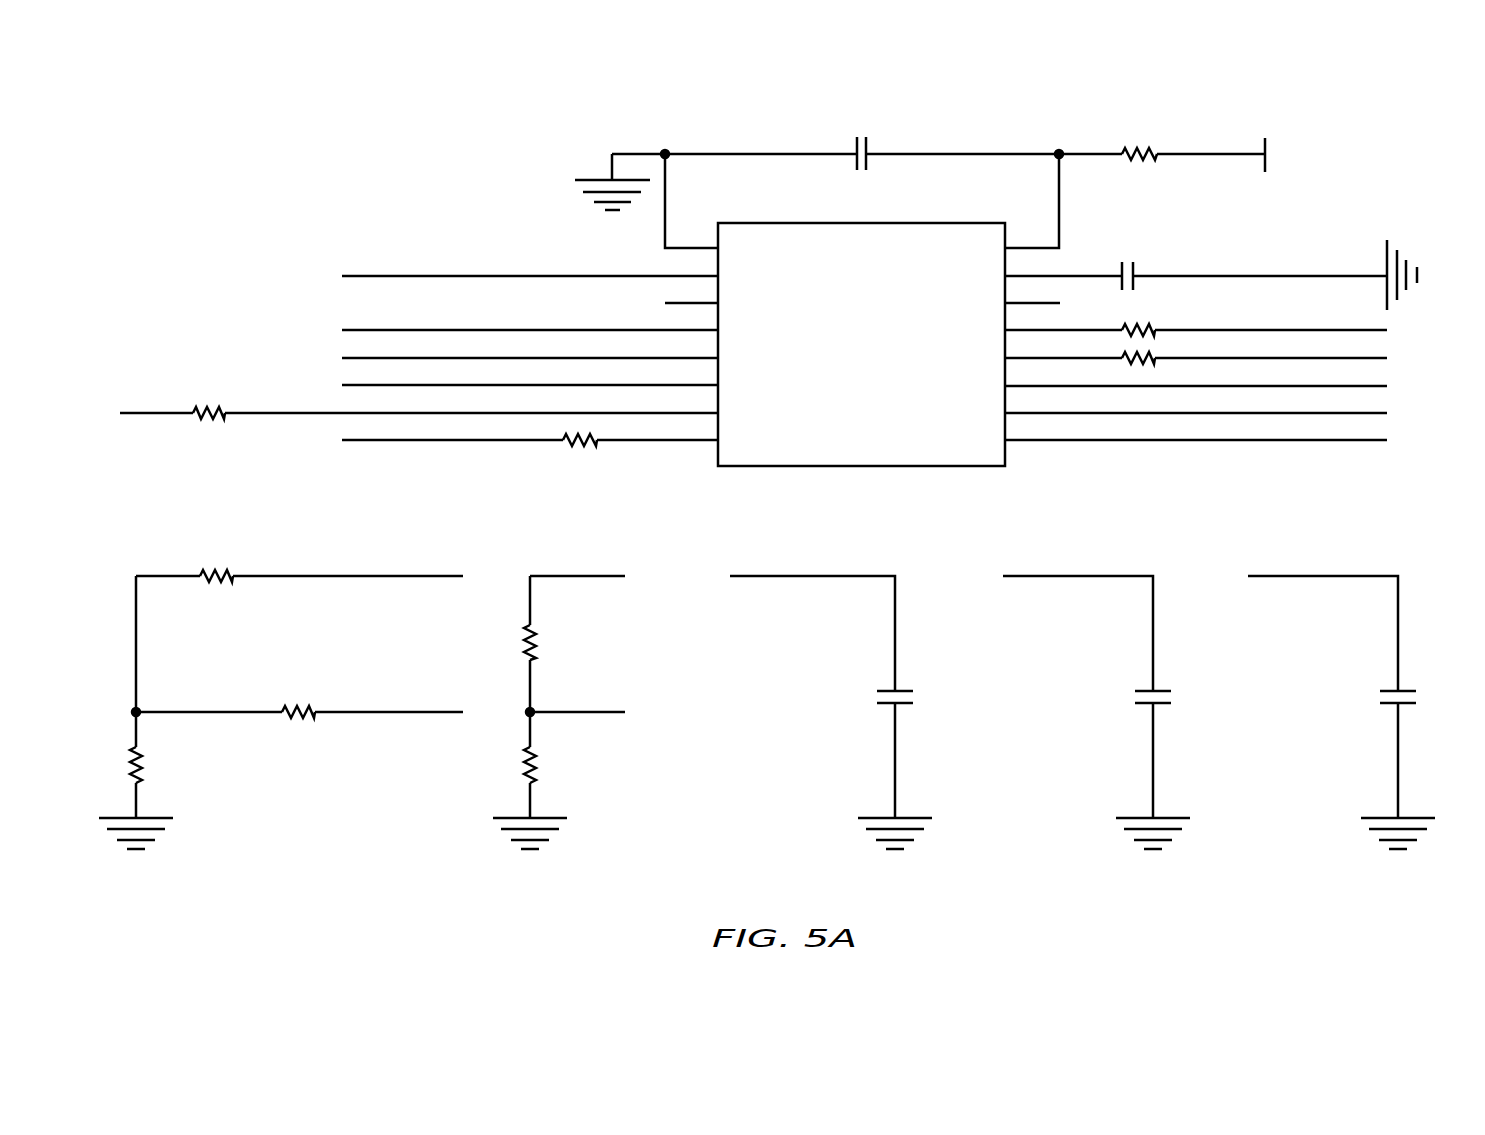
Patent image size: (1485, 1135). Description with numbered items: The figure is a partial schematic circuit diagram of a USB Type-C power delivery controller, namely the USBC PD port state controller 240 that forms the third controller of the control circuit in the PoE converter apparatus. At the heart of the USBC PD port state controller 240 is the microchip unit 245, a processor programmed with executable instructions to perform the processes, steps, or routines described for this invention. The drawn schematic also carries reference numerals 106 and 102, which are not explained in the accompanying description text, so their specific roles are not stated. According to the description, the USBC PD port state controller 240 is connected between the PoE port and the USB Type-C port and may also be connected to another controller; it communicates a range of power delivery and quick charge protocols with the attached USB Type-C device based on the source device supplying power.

The USBC PD port state controller 240 is at (978, 95).
The capacitor C1 106 is at (862, 156).
The capacitor C2 102 is at (1131, 268).
The microchip unit (MCU) 245 is at (882, 448).